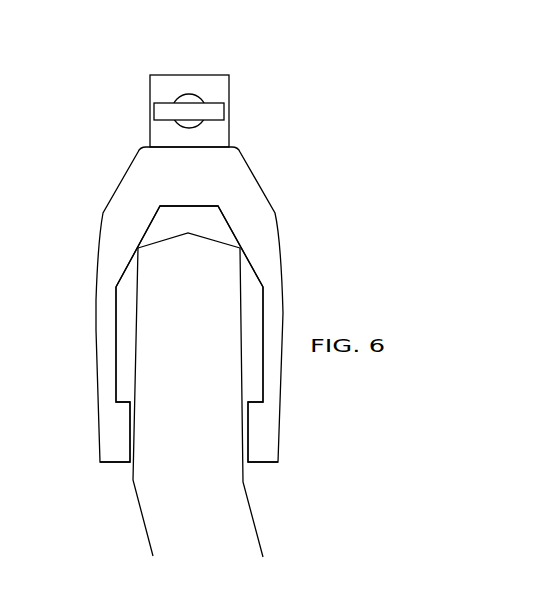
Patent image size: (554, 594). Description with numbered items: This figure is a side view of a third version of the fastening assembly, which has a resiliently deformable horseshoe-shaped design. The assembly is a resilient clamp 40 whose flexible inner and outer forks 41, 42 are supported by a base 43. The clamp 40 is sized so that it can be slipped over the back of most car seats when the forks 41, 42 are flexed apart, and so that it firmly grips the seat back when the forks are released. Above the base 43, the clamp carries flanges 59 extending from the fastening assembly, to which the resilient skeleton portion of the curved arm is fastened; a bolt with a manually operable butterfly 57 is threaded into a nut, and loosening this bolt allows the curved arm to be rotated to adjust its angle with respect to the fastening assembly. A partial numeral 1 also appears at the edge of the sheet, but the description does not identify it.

The resilient clamp 40 is at (292, 185).
The inner fork 41 is at (272, 392).
The outer fork 42 is at (107, 380).
The base 43 is at (167, 171).
The butterfly 57 is at (210, 112).
The flanges 59 is at (155, 86).
The instrument 1 is at (4, 291).